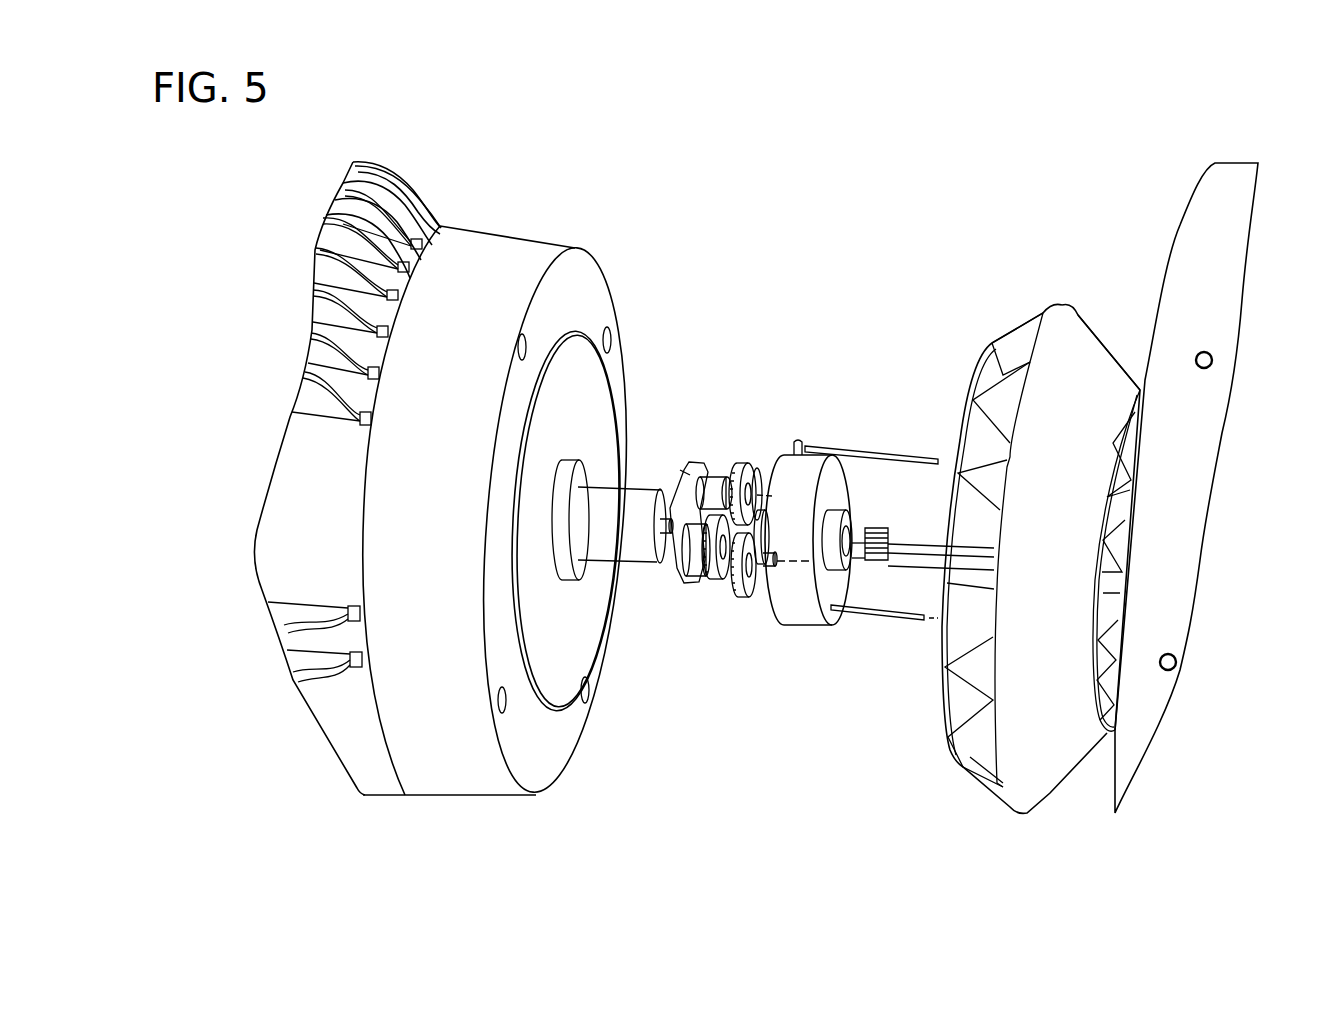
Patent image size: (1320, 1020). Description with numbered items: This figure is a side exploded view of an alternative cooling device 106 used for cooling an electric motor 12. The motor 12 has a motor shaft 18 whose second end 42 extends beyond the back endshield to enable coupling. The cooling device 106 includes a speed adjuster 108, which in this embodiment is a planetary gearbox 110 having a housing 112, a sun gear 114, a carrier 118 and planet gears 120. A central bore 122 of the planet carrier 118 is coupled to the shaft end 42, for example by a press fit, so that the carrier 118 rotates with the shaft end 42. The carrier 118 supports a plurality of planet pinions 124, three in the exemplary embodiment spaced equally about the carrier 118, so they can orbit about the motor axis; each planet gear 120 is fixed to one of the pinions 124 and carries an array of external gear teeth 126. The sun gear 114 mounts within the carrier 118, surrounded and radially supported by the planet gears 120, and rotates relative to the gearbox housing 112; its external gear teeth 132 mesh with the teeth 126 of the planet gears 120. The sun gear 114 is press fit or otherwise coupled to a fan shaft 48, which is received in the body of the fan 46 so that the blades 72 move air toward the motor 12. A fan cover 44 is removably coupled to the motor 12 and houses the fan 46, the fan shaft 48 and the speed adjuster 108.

The electric motor 12 is at (425, 492).
The motor shaft 18 is at (600, 552).
The second end 42 is at (661, 535).
The fan cover 44 is at (1232, 176).
The fan 46 is at (1063, 360).
The fan shaft 48 is at (912, 553).
The blades 72 is at (1018, 345).
The cooling device 106 is at (985, 296).
The speed adjuster 108 is at (818, 434).
The planetary gearbox 110 is at (762, 613).
The housing 112 is at (790, 627).
The sun gear 114 is at (882, 528).
The carrier 118 is at (693, 463).
The planet gears 120 is at (728, 462).
The central bore 122 is at (700, 495).
The planet pinions 124 is at (697, 578).
The external gear teeth 126 is at (750, 466).
The external gear teeth 132 is at (886, 530).